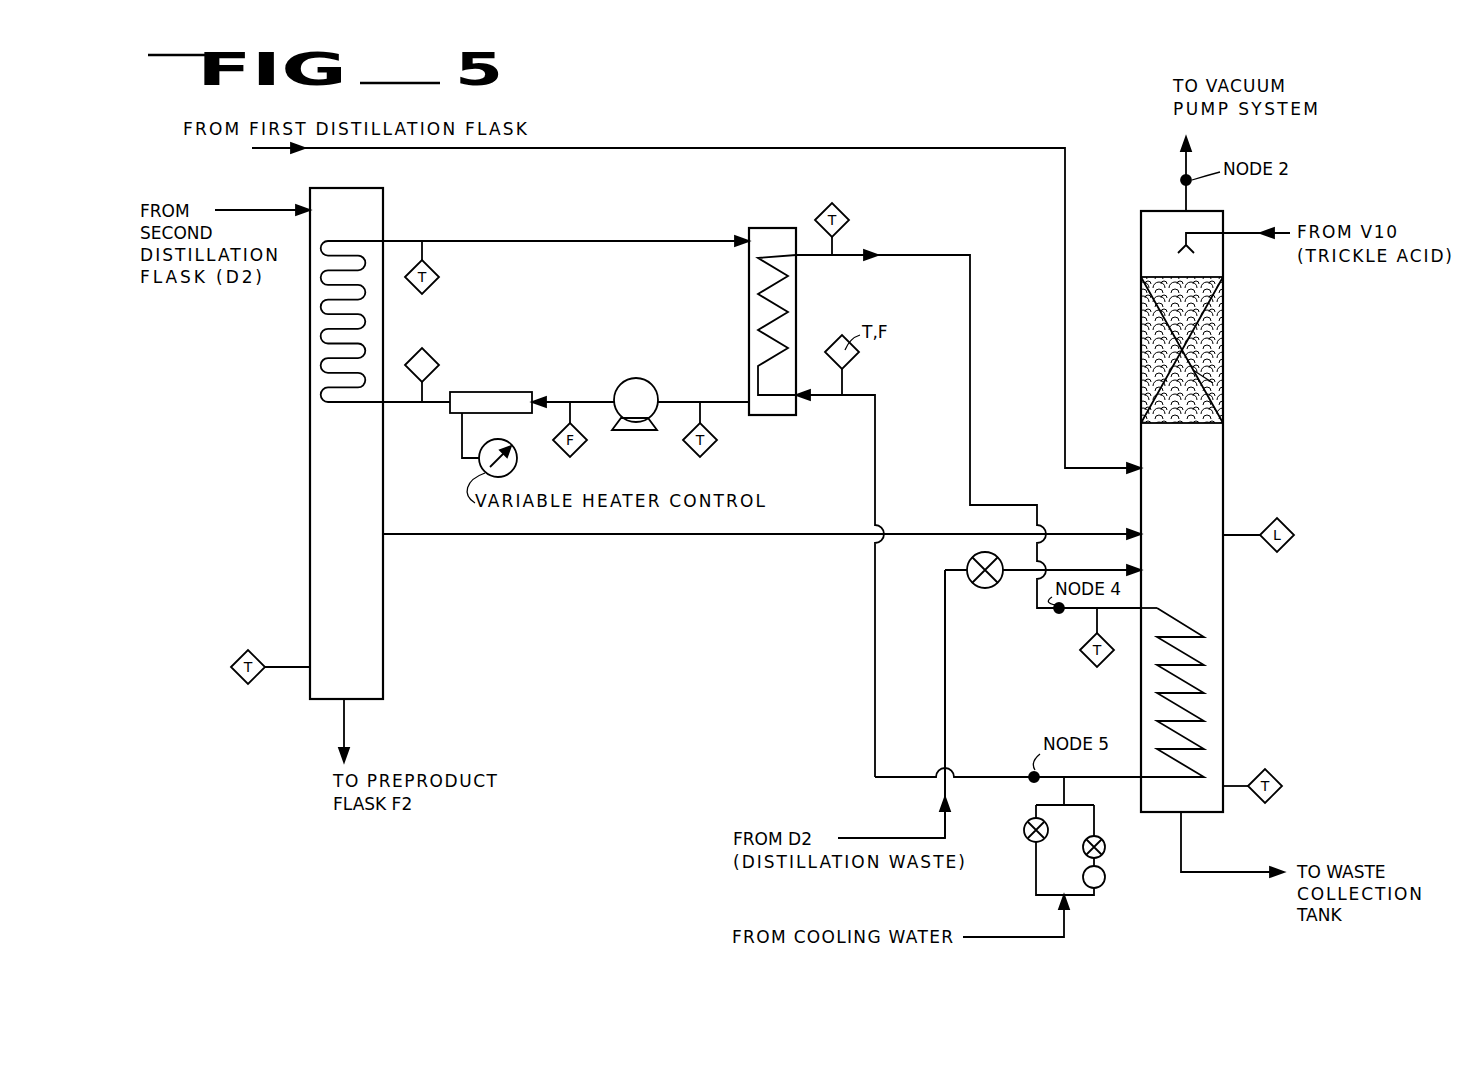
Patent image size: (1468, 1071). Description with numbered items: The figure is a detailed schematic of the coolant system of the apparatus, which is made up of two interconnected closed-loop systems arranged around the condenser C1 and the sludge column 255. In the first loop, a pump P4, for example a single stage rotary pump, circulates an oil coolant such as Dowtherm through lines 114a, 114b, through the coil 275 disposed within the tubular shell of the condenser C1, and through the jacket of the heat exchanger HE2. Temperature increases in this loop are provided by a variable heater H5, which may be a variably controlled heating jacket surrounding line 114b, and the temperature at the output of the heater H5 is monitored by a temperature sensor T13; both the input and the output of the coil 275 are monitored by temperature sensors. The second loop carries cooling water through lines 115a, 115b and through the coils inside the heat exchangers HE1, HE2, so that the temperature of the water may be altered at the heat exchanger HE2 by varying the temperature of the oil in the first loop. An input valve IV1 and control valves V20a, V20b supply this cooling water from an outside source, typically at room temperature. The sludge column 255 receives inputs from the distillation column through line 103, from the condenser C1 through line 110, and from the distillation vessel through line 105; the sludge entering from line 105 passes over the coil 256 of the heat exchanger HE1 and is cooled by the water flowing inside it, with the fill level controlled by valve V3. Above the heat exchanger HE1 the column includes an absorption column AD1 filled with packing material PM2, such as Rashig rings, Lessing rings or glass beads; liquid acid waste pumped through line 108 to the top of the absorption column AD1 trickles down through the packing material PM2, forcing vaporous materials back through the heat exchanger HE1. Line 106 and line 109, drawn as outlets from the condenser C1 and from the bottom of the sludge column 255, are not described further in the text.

The line 103 is at (612, 148).
The line 105 is at (941, 642).
The preproduct outlet line to flask F2 106 is at (341, 718).
The line 108 is at (1243, 232).
The waste line to collection tank 109 is at (1200, 870).
The line 110 is at (626, 539).
The line 114a is at (578, 243).
The line 114b is at (589, 400).
The line 115a is at (870, 432).
The line 115b is at (980, 478).
The sludge column 255 is at (1237, 461).
The coil 256 is at (1187, 618).
The coil 275 is at (367, 319).
The condenser C1 is at (306, 348).
The temperature sensor T13 is at (429, 358).
The variable heater H5 is at (479, 392).
The pump P4 is at (635, 404).
The heat exchanger HE2 is at (799, 303).
The heat exchanger HE1 is at (1225, 714).
The valve V3 is at (983, 587).
The control valve V20a is at (1128, 850).
The control valve V20b is at (1028, 817).
The input valve IV1 is at (1105, 877).
The absorption column AD1 is at (1219, 332).
The packing material PM2 is at (1213, 383).